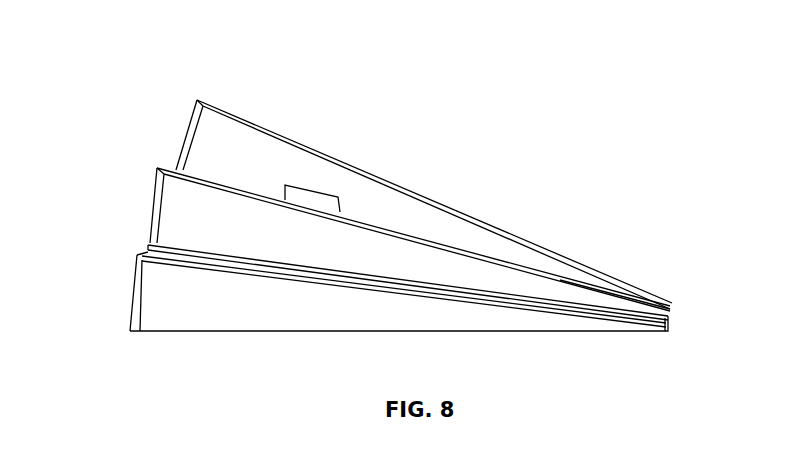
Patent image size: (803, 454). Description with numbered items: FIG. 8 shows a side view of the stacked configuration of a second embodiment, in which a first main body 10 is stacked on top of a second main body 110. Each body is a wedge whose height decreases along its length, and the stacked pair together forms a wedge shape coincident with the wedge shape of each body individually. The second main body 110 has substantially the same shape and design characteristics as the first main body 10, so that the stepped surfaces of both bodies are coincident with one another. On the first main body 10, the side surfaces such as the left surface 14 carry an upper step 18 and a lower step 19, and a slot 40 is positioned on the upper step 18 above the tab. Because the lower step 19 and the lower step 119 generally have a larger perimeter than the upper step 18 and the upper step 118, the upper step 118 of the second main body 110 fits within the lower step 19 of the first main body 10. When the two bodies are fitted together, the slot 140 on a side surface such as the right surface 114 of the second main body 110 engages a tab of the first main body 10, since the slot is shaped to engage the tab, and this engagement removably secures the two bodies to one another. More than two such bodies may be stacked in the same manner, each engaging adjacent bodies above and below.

The main body 10 is at (171, 90).
The left surface 14 is at (395, 252).
The upper step 18 is at (483, 245).
The lower step 19 is at (568, 292).
The slot 40 is at (312, 200).
The second main body 110 is at (145, 345).
The right surface 114 is at (422, 313).
The upper step 118 is at (228, 257).
The lower step 119 is at (362, 310).
The slot 140 is at (293, 265).